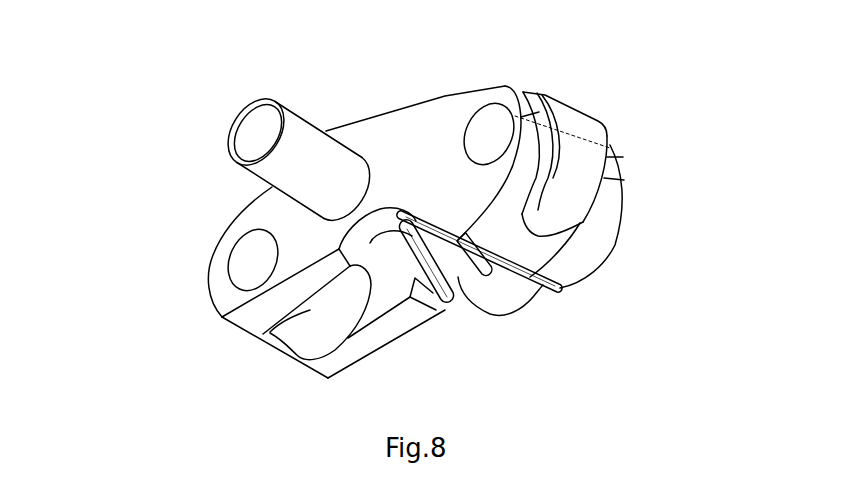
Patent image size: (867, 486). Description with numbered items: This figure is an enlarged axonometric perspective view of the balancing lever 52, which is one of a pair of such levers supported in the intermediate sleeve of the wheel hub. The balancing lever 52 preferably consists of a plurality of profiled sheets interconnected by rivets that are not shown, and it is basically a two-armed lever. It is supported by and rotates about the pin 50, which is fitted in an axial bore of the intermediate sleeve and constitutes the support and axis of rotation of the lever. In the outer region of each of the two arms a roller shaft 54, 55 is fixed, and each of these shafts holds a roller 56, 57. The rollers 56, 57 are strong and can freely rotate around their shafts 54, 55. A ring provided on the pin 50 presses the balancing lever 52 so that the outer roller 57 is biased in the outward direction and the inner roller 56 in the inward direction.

The pin 50 is at (253, 132).
The balancing lever 52 is at (535, 308).
The roller shaft 54 is at (253, 260).
The roller shaft 55 is at (478, 128).
The roller 56 is at (287, 337).
The roller 57 is at (587, 142).